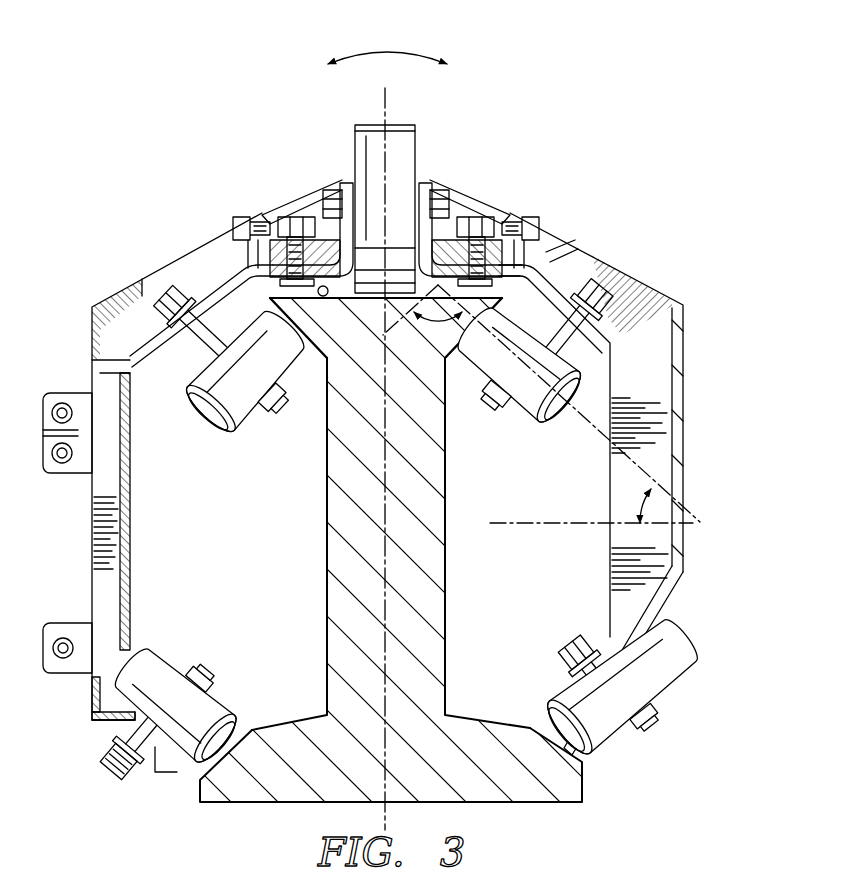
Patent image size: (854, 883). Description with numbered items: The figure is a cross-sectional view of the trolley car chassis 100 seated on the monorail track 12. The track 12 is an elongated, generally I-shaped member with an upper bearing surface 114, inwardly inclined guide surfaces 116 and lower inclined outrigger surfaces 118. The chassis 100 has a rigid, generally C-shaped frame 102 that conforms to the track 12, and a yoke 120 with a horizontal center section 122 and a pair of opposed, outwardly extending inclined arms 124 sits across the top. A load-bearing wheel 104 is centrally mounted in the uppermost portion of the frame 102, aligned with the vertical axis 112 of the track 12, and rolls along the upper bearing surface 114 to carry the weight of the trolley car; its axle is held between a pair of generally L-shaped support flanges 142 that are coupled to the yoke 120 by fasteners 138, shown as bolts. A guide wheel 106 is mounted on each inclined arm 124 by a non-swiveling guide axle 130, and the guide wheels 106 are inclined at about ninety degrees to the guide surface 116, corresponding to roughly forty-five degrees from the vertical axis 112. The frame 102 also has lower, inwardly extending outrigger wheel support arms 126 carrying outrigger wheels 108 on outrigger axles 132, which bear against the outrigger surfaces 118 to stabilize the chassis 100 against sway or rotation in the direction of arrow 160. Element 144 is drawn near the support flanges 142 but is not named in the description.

The trolley car chassis 100 is at (427, 418).
The monorail track 12 is at (327, 556).
The C-shaped frame 102 is at (103, 298).
The load-bearing wheel 104 is at (367, 125).
The guide wheel 106 is at (205, 424).
The outrigger wheel 108 is at (174, 663).
The vertical axis 112 is at (388, 103).
The upper bearing surface 114 is at (324, 298).
The guide surface 116 is at (310, 360).
The outrigger surface 118 is at (198, 778).
The yoke 120 is at (585, 280).
The horizontal center section 122 is at (550, 256).
The inclined arm 124 is at (172, 332).
The outrigger wheel support arm 126 is at (688, 565).
The guide axle 130 is at (268, 418).
The outrigger axle 132 is at (110, 766).
The fastener 138 is at (300, 214).
The support flange 142 is at (324, 196).
The support arm 144 is at (302, 184).
The arrow 160 is at (362, 54).